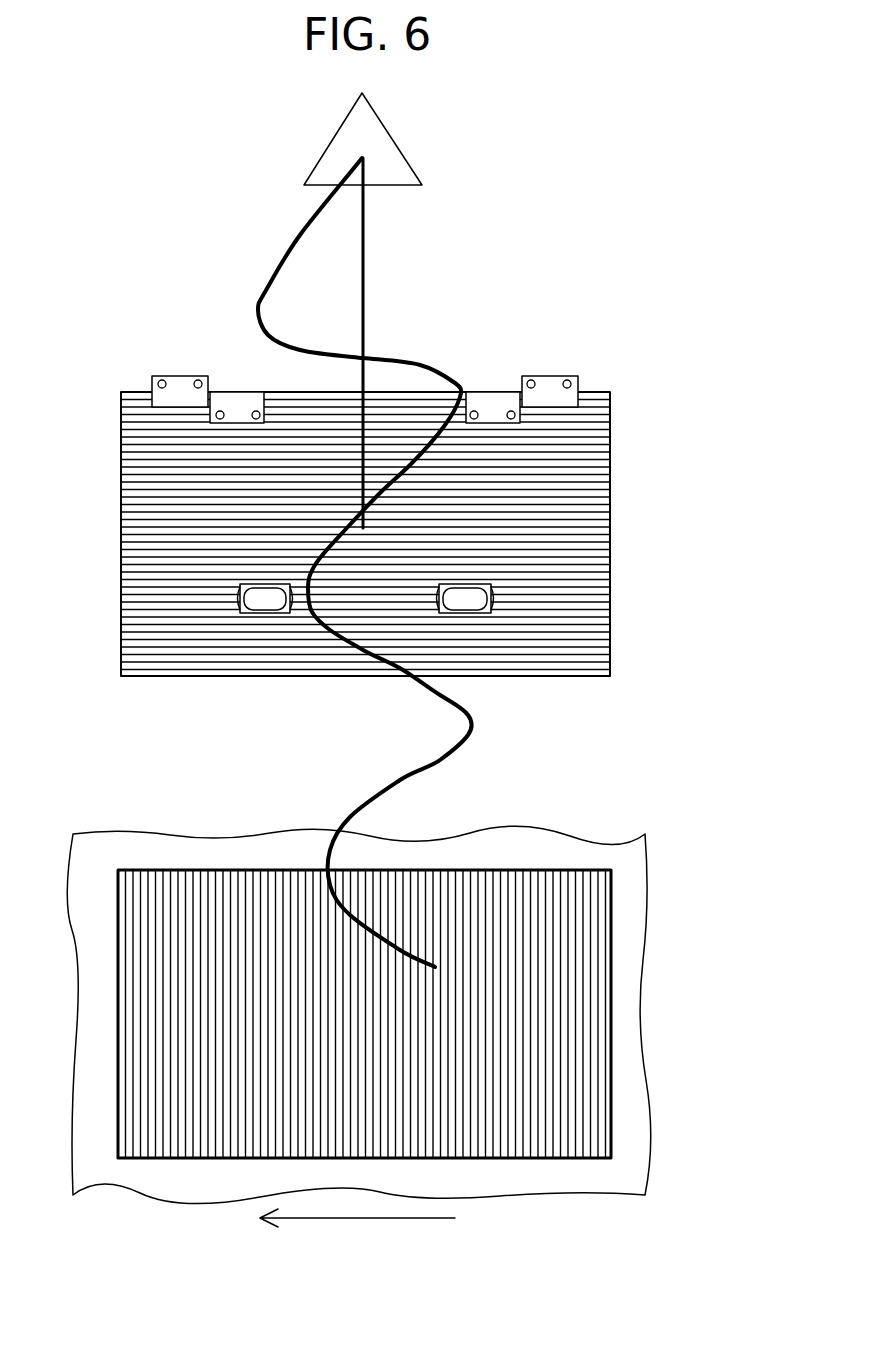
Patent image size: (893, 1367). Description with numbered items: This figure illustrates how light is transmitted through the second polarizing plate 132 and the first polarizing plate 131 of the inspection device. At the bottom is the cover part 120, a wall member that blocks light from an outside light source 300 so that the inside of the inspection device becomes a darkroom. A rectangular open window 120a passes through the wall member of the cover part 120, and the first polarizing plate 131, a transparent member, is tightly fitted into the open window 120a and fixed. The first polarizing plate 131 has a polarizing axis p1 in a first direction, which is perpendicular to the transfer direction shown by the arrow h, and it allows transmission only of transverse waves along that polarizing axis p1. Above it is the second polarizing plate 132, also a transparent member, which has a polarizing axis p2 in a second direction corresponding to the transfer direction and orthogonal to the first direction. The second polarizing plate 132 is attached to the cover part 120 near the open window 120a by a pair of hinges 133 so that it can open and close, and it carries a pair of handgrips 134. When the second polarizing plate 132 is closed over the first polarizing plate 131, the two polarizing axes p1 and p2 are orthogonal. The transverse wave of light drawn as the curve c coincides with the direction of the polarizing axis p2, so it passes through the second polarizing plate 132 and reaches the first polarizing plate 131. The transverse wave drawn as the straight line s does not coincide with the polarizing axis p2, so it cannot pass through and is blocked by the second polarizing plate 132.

The outside light source 300 is at (389, 129).
The straight line s is at (363, 265).
The curve c is at (415, 365).
The hinges 133 is at (180, 376).
The polarizing axis p2 is at (583, 548).
The second polarizing plate 132 is at (611, 599).
The handgrips 134 is at (268, 600).
The first polarizing plate 131 is at (520, 890).
The polarizing axis p1 is at (588, 903).
The open window 120a is at (611, 968).
The cover part 120 is at (625, 1022).
The arrow h is at (385, 1221).